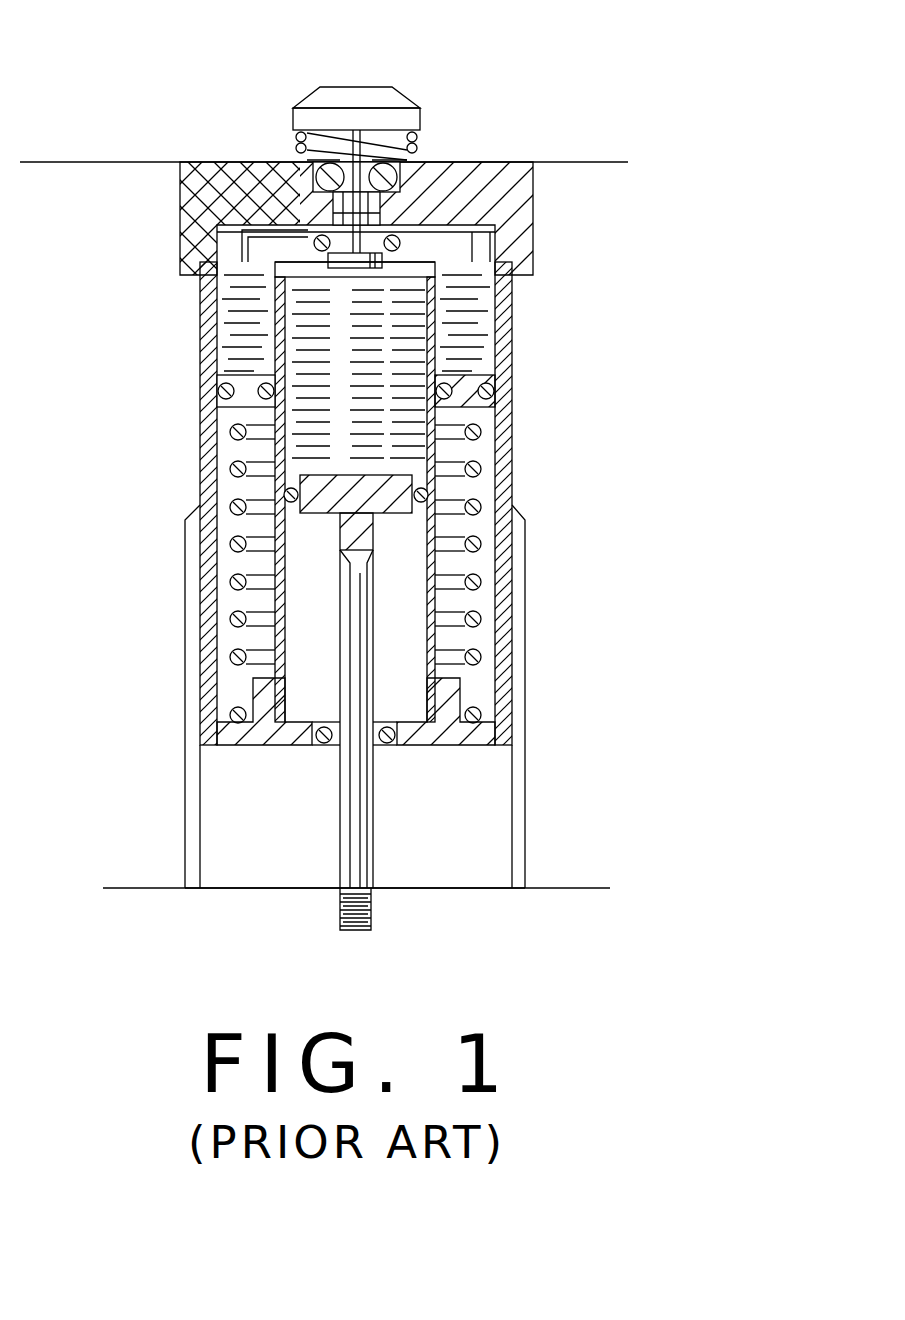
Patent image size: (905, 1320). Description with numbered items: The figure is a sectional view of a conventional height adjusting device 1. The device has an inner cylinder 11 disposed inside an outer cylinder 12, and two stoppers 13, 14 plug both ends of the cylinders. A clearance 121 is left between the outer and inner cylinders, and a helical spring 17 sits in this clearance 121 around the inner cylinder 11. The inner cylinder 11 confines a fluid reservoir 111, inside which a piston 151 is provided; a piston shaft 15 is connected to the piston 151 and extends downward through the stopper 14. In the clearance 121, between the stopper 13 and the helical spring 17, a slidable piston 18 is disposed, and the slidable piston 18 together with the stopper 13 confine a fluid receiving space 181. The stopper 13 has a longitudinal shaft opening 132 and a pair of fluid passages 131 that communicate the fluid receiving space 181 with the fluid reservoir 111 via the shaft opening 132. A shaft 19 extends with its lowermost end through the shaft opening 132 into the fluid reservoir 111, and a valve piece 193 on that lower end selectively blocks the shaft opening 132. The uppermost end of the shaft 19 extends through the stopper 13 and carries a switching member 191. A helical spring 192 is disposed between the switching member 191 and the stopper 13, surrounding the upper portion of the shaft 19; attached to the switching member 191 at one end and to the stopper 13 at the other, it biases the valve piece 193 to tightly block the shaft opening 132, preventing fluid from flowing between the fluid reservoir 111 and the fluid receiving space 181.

The height adjusting device 1 is at (534, 637).
The inner cylinder 11 is at (510, 420).
The fluid reservoir 111 is at (460, 269).
The outer cylinder 12 is at (420, 389).
The clearance 121 is at (493, 700).
The stopper 13 is at (535, 229).
The fluid passages 131 is at (544, 178).
The shaft opening 132 is at (313, 208).
The stopper 14 is at (420, 725).
The piston shaft 15 is at (352, 862).
The piston 151 is at (465, 494).
The helical spring 17 is at (426, 576).
The slidable piston 18 is at (404, 575).
The fluid receiving space 181 is at (483, 305).
The shaft 19 is at (312, 170).
The switching member 191 is at (357, 115).
The helical spring 192 is at (336, 99).
The valve piece 193 is at (379, 152).